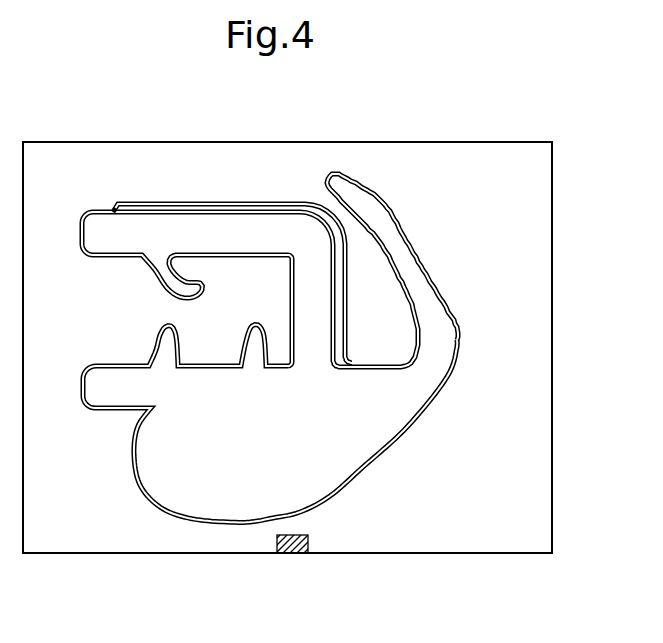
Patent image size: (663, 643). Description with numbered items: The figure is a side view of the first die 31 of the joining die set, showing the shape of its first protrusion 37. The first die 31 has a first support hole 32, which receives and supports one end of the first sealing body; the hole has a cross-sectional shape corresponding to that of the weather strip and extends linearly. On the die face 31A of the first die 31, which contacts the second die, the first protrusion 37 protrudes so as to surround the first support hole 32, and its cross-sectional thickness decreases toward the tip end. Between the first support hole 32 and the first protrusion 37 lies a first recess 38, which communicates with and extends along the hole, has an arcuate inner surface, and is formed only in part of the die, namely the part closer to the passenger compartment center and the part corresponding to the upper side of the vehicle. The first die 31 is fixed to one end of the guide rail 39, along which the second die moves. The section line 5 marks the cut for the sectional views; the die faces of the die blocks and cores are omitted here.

The first die 31 is at (552, 203).
The die face 31A is at (540, 360).
The first support hole 32 is at (361, 456).
The first protrusion 37 is at (391, 207).
The first recess 38 is at (233, 211).
The guide rail 39 is at (306, 538).
The section line 5- 5 is at (214, 122).